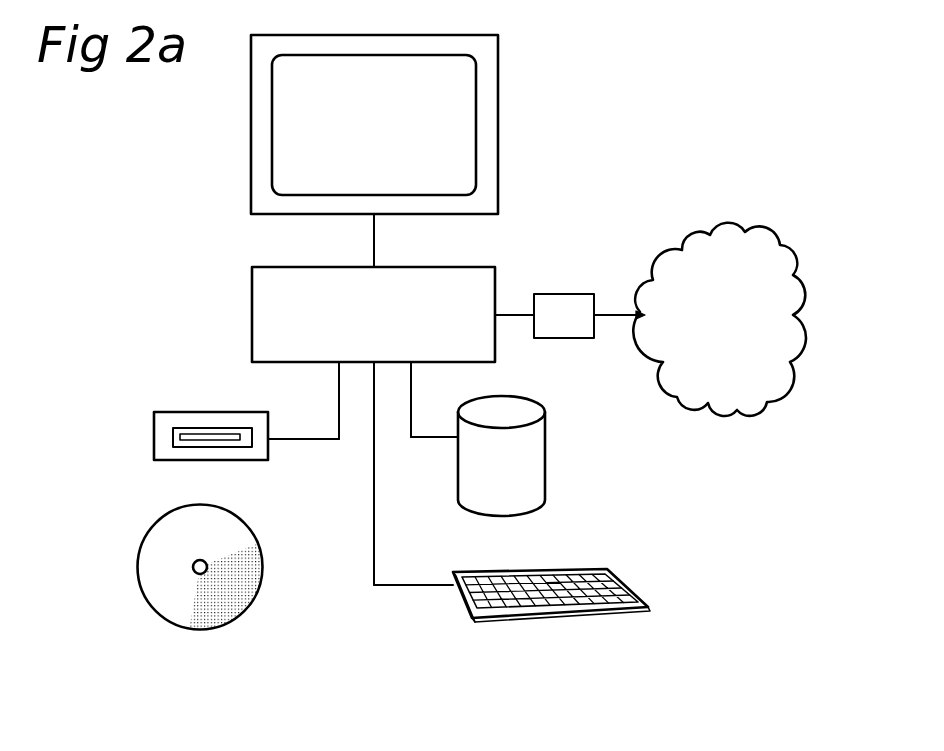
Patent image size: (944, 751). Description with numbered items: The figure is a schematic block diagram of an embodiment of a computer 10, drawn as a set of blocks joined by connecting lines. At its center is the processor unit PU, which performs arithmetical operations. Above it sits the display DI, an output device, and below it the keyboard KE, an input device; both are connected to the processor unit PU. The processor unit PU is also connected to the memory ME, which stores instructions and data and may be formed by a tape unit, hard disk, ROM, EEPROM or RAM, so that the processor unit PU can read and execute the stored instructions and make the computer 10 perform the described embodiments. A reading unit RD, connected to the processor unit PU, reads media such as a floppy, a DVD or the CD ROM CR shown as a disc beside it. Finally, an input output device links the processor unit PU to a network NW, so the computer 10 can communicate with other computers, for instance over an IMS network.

The computer 10 is at (624, 162).
The display DI is at (452, 110).
The processor unit PU is at (270, 283).
The network NW is at (719, 319).
The reader RD is at (188, 418).
The memory ME is at (530, 472).
The CD ROM CR is at (172, 542).
The keyboard KE is at (617, 588).